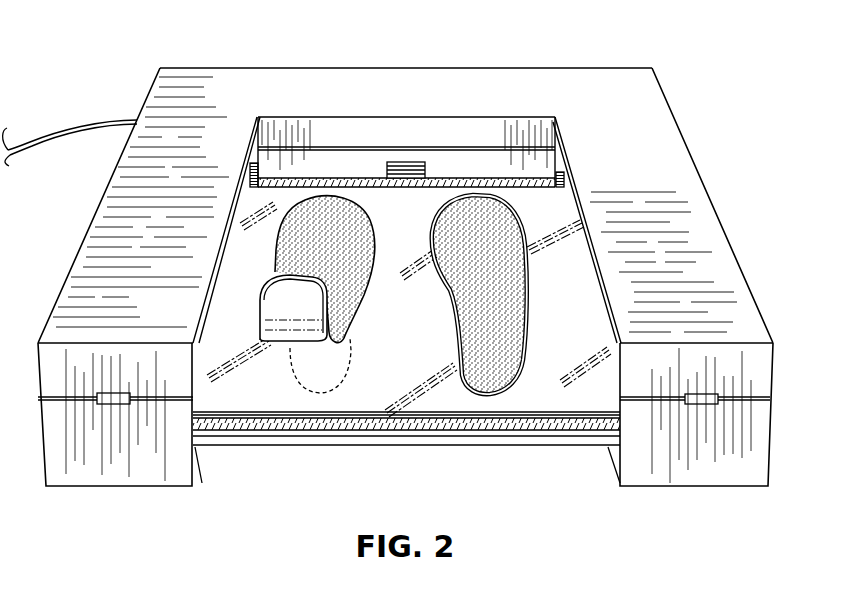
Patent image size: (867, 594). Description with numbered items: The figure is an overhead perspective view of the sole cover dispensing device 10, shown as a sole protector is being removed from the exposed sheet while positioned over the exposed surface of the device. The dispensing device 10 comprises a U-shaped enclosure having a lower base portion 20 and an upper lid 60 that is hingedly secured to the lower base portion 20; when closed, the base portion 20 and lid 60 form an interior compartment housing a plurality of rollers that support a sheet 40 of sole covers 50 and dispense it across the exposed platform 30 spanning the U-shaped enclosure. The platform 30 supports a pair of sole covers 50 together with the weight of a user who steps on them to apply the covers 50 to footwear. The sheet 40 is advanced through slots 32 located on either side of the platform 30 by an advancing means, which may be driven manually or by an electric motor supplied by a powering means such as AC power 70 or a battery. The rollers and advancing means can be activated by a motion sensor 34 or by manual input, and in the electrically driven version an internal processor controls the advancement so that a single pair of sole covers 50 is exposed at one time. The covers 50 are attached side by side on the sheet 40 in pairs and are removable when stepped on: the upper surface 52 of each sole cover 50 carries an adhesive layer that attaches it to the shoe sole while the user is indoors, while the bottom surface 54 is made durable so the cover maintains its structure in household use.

The dispensing device 10 is at (730, 177).
The lower base portion 20 is at (752, 470).
The platform 30 is at (500, 440).
The slots 32 is at (238, 250).
The motion sensor 34 is at (408, 165).
The sheet 40 is at (363, 400).
The sole cover 50 is at (478, 350).
The upper surface 52 is at (330, 205).
The bottom surface 54 is at (290, 328).
The upper lid 60 is at (660, 127).
The AC power 70 is at (78, 122).